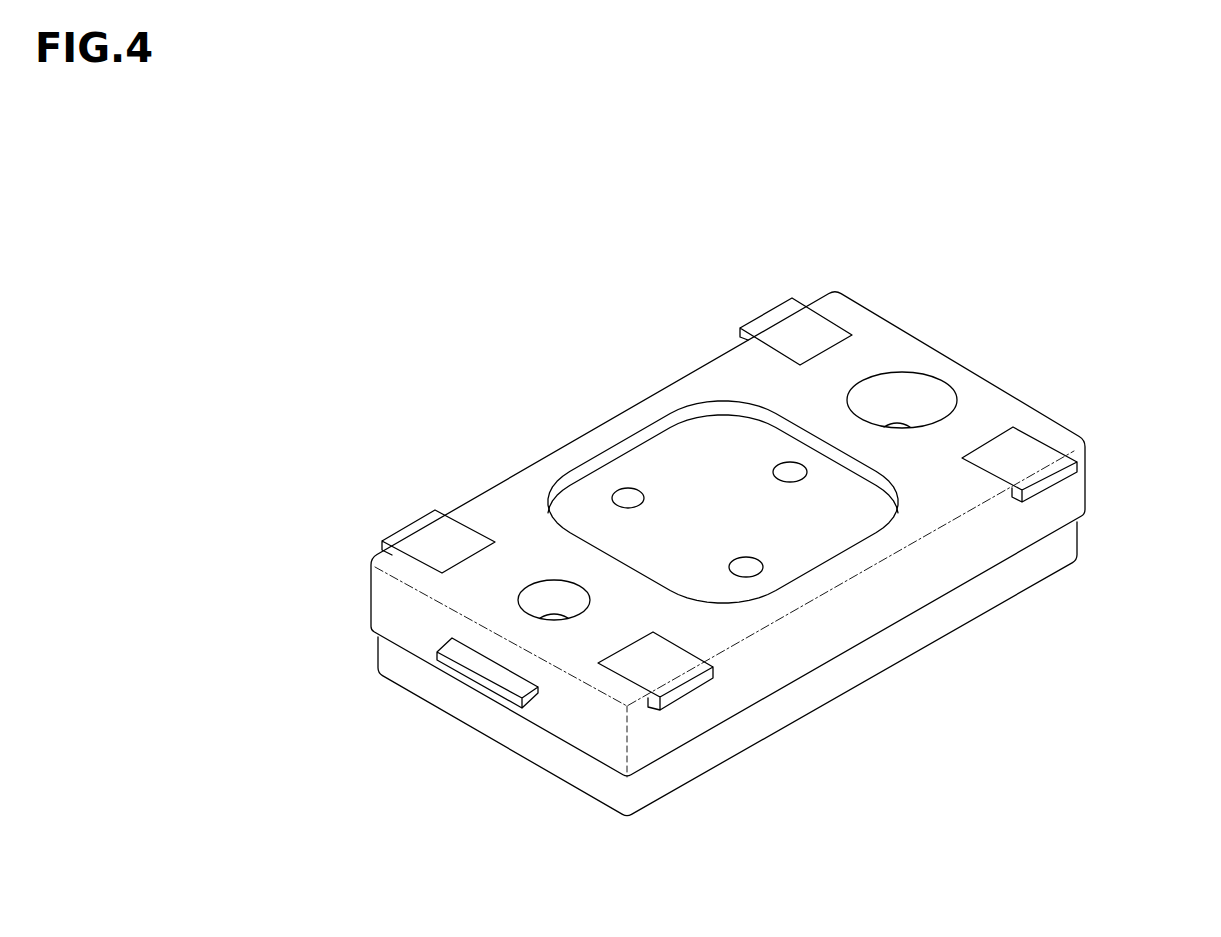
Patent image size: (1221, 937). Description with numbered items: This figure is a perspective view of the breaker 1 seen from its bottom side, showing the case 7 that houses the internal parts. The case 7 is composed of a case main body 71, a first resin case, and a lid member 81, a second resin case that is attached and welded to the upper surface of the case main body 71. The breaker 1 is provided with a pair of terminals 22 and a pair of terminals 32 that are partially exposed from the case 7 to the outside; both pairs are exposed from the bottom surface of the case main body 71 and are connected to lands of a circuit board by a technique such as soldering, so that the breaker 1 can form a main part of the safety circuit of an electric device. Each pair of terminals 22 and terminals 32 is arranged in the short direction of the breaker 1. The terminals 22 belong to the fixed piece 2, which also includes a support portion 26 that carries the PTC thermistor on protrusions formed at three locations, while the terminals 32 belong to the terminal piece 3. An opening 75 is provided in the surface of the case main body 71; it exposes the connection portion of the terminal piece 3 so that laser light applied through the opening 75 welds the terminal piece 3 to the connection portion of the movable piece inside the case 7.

The breaker 1 is at (1174, 217).
The fixed piece 2 is at (553, 615).
The terminal piece 3 is at (900, 427).
The case 7 is at (928, 572).
The terminals 22 is at (436, 548).
The support portion 26 is at (667, 473).
The terminals 32 is at (802, 337).
The case main body 71 is at (700, 390).
The opening 75 is at (922, 400).
The lid member 81 is at (693, 762).